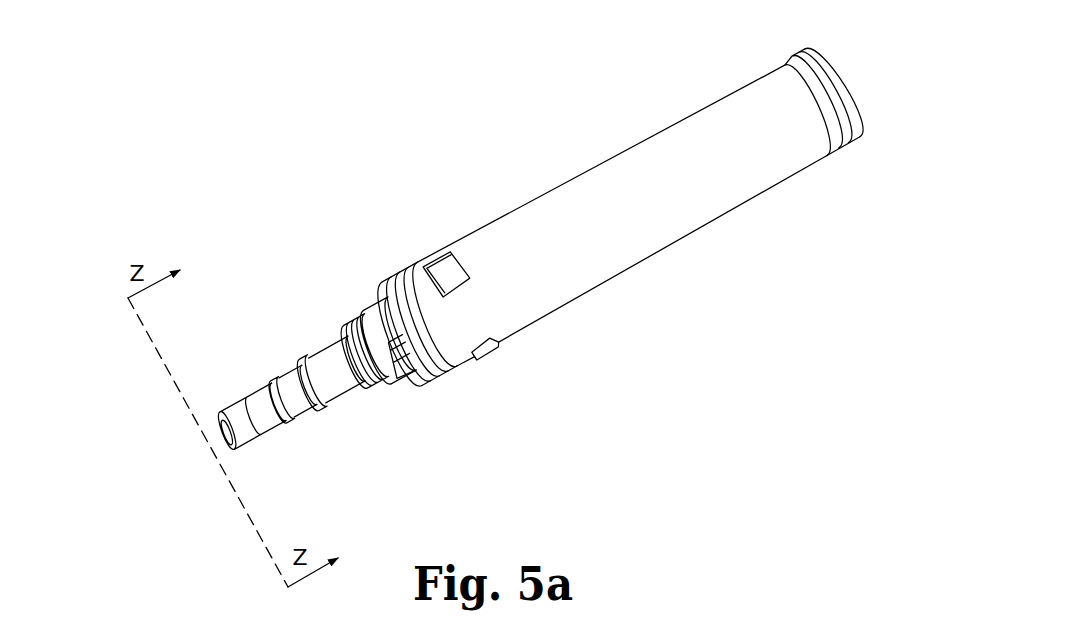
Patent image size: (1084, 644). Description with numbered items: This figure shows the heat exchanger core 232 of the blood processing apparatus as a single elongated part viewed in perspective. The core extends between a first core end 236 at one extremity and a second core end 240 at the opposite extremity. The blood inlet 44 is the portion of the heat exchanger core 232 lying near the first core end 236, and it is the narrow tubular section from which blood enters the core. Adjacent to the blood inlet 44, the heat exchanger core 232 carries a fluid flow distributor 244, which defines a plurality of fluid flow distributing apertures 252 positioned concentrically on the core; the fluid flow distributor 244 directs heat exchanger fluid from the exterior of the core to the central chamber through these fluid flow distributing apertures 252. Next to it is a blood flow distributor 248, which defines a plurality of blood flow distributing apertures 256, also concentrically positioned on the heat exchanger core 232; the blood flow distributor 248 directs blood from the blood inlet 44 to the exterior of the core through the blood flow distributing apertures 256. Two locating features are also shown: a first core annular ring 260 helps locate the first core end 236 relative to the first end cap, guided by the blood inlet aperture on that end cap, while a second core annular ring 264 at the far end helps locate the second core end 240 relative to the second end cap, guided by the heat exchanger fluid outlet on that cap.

The heat exchanger core 232 is at (407, 68).
The second core end 240 is at (864, 66).
The second core annular ring 264 is at (851, 148).
The blood flow distributor 248 is at (406, 251).
The fluid flow distributing apertures 252 is at (378, 300).
The blood flow distributing apertures 256 is at (444, 277).
The first core annular ring 260 is at (450, 375).
The fluid flow distributor 244 is at (390, 394).
The first core end 236 is at (150, 415).
The blood inlet 44 is at (224, 437).